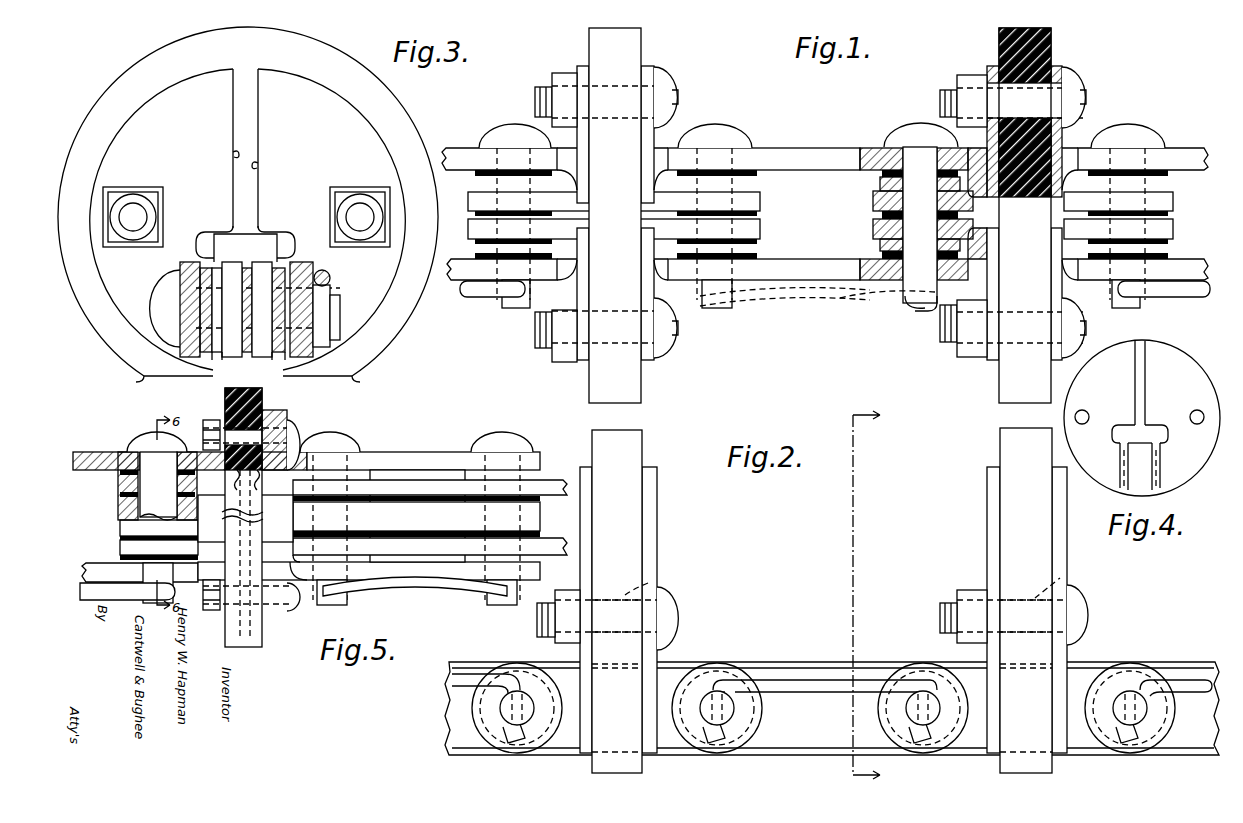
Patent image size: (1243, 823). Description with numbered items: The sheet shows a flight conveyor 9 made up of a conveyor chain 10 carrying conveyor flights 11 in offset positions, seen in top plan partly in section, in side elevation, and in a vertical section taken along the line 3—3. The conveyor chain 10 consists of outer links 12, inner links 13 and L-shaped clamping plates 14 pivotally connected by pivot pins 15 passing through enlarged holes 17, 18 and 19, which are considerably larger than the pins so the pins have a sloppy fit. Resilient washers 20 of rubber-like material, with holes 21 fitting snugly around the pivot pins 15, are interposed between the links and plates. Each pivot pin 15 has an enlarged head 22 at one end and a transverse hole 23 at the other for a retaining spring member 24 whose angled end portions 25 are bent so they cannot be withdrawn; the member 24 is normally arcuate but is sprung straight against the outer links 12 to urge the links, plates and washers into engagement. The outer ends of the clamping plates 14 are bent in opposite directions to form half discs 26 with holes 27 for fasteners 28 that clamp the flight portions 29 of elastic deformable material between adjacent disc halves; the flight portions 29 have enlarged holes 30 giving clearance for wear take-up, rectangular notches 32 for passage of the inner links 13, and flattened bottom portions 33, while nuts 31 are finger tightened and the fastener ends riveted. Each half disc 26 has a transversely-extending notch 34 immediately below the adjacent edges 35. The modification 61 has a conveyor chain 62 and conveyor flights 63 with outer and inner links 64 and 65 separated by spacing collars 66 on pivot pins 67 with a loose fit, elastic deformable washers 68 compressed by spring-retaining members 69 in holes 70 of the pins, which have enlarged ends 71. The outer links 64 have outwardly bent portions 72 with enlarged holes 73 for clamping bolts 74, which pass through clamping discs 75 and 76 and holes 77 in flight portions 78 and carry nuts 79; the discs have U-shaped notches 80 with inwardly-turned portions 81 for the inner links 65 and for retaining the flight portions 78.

In FIG. 2, the section line 3— 3 is at (874, 596).
In FIG. 1, the flight conveyor 9 is at (1098, 126).
In FIG. 2, the flight conveyor 9 is at (688, 648).
In FIG. 1, the conveyor chain 10 is at (1184, 146).
In FIG. 2, the conveyor chain 10 is at (1163, 660).
In FIG. 3, the conveyor flights 11 is at (334, 52).
In FIG. 1, the conveyor flights 11 is at (655, 66).
In FIG. 2, the conveyor flights 11 is at (658, 515).
In FIG. 3, the outer links 12 is at (182, 264).
In FIG. 1, the outer links 12 is at (452, 156).
In FIG. 2, the outer links 12 is at (467, 749).
In FIG. 3, the inner links 13 is at (232, 264).
In FIG. 1, the inner links 13 is at (762, 200).
In FIG. 3, the clamping plates 14 is at (217, 346).
In FIG. 1, the clamping plates 14 is at (875, 185).
In FIG. 4, the clamping plates 14 is at (1120, 492).
In FIG. 2, the clamping plates 14 is at (566, 742).
In FIG. 3, the pivot pins 15 is at (340, 302).
In FIG. 1, the pivot pins 15 is at (506, 306).
In FIG. 2, the pivot pins 15 is at (735, 712).
In FIG. 1, the enlarged hole 17 is at (916, 214).
In FIG. 1, the enlarged hole 18 is at (920, 215).
In FIG. 1, the enlarged hole 19 is at (917, 213).
In FIG. 3, the resilient washers 20 is at (206, 266).
In FIG. 1, the resilient washers 20 is at (882, 175).
In FIG. 1, the holes 21 is at (920, 215).
In FIG. 3, the enlarged head 22 is at (166, 300).
In FIG. 1, the enlarged head 22 is at (511, 130).
In FIG. 1, the transverse hole 23 is at (927, 312).
In FIG. 2, the transverse hole 23 is at (698, 720).
In FIG. 3, the retaining spring member 24 is at (331, 278).
In FIG. 1, the retaining spring member 24 is at (465, 297).
In FIG. 2, the retaining spring member 24 is at (808, 680).
In FIG. 2, the angled end portions 25 is at (726, 698).
In FIG. 3, the half discs 26 is at (247, 128).
In FIG. 1, the half discs 26 is at (585, 160).
In FIG. 4, the half discs 26 is at (1118, 352).
In FIG. 2, the half discs 26 is at (580, 522).
In FIG. 1, the holes 27 is at (662, 90).
In FIG. 4, the holes 27 is at (1140, 406).
In FIG. 2, the holes 27 is at (872, 617).
In FIG. 3, the fasteners 28 is at (134, 213).
In FIG. 1, the fasteners 28 is at (538, 97).
In FIG. 2, the fasteners 28 is at (536, 624).
In FIG. 3, the flight portions 29 is at (386, 110).
In FIG. 1, the flight portions 29 is at (628, 46).
In FIG. 2, the flight portions 29 is at (822, 600).
In FIG. 1, the enlarged holes 30 is at (612, 120).
In FIG. 2, the enlarged holes 30 is at (648, 583).
In FIG. 3, the nuts 31 is at (162, 197).
In FIG. 1, the nuts 31 is at (563, 78).
In FIG. 2, the nuts 31 is at (554, 643).
In FIG. 3, the rectangular notches 32 is at (220, 340).
In FIG. 3, the flattened bottom portions 33 is at (160, 380).
In FIG. 2, the flattened bottom portions 33 is at (616, 776).
In FIG. 3, the transversely-extending notch 34 is at (202, 236).
In FIG. 4, the transversely-extending notch 34 is at (1113, 440).
In FIG. 3, the adjacent edges 35 is at (233, 150).
In FIG. 4, the adjacent edges 35 is at (1134, 378).
In FIG. 5, the modification 61 is at (376, 450).
In FIG. 5, the conveyor chain 62 is at (441, 452).
In FIG. 5, the conveyor flights 63 is at (296, 416).
In FIG. 5, the outer links 64 is at (95, 452).
In FIG. 5, the inner links 65 is at (358, 486).
In FIG. 5, the spacing collars 66 is at (358, 516).
In FIG. 5, the pivot pins 67 is at (515, 587).
In FIG. 5, the elastic deformable washers 68 is at (360, 500).
In FIG. 5, the spring-retaining members 69 is at (420, 590).
In FIG. 5, the holes 70 is at (342, 606).
In FIG. 5, the enlarged ends 71 is at (338, 438).
In FIG. 5, the outwardly bent portions 72 is at (284, 410).
In FIG. 5, the enlarged holes 73 is at (270, 410).
In FIG. 5, the clamping bolts 74 is at (298, 440).
In FIG. 5, the clamping disc 75 is at (282, 480).
In FIG. 5, the clamping disc 76 is at (222, 462).
In FIG. 5, the holes 77 is at (225, 405).
In FIG. 5, the flight portions 78 is at (225, 392).
In FIG. 5, the nuts 79 is at (206, 430).
In FIG. 5, the U-shaped notches 80 is at (250, 491).
In FIG. 5, the inwardly-turned portions 81 is at (234, 495).